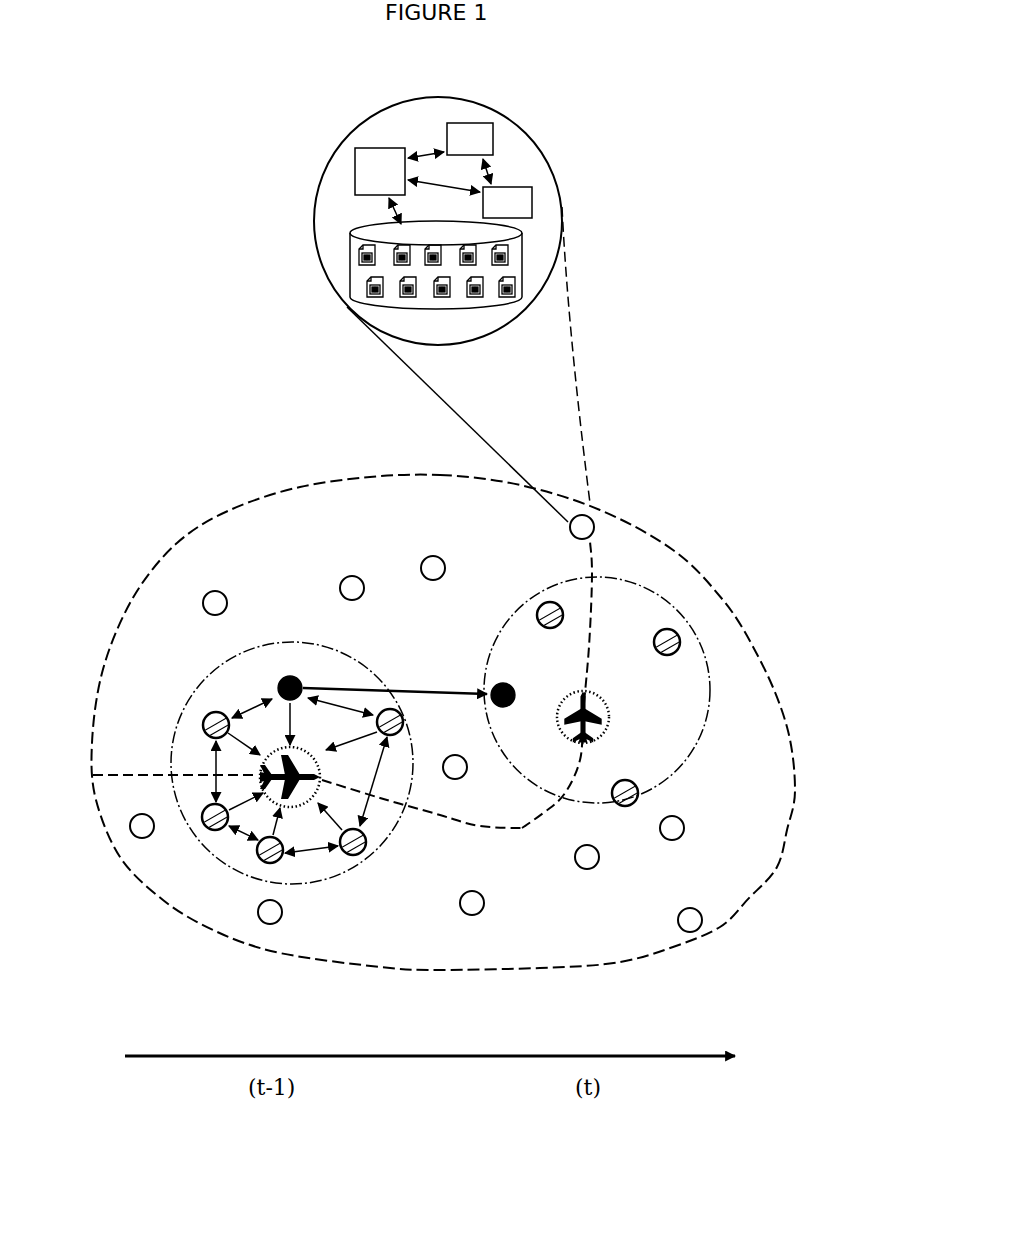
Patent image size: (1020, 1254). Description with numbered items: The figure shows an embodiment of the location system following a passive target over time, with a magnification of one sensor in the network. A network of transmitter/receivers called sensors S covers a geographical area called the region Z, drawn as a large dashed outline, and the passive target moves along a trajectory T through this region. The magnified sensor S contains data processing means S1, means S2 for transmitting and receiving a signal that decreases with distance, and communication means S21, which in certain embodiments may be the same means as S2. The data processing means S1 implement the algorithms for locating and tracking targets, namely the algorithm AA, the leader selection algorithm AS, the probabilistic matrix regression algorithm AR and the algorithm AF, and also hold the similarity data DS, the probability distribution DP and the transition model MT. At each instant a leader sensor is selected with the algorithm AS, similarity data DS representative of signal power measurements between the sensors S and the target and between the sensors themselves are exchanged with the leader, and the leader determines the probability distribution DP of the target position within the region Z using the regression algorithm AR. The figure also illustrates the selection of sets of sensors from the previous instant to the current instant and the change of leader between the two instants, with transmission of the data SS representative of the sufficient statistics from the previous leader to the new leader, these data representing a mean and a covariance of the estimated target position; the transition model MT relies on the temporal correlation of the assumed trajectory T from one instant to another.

The sensor S is at (317, 190).
The data processing means S1 is at (355, 163).
The means for transmitting/receiving a signal that decreases with distance S2 is at (485, 123).
The communication means S21 is at (533, 195).
The data representative of the sufficient statistics SS is at (508, 255).
The leader selection algorithm AS is at (360, 260).
The algorithm for locating and/or tracking targets AA is at (367, 287).
The probabilistic matrix regression algorithm AR is at (398, 268).
The similarity data DS is at (408, 293).
The probability distribution DP is at (440, 295).
The algorithm for locating and/or tracking targets AF is at (477, 297).
The transition model MT is at (513, 288).
The region Z is at (672, 550).
The trajectory T is at (522, 830).